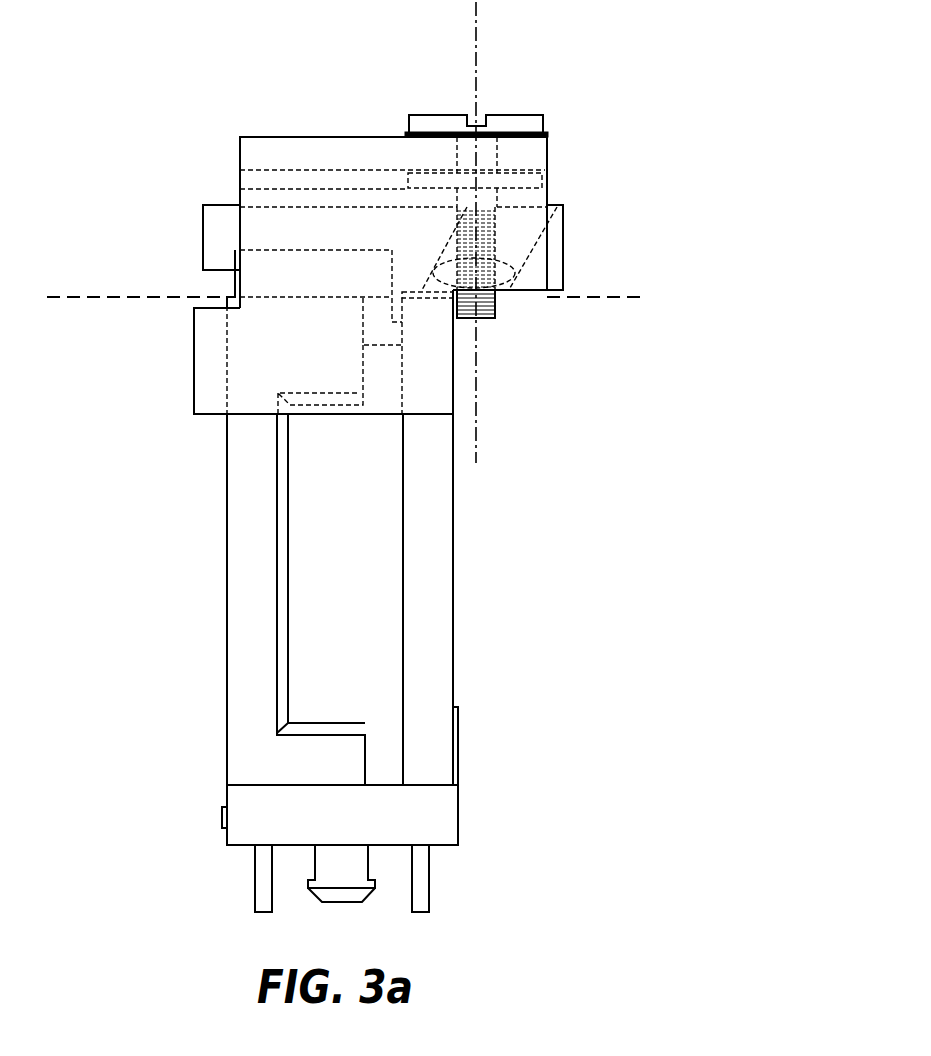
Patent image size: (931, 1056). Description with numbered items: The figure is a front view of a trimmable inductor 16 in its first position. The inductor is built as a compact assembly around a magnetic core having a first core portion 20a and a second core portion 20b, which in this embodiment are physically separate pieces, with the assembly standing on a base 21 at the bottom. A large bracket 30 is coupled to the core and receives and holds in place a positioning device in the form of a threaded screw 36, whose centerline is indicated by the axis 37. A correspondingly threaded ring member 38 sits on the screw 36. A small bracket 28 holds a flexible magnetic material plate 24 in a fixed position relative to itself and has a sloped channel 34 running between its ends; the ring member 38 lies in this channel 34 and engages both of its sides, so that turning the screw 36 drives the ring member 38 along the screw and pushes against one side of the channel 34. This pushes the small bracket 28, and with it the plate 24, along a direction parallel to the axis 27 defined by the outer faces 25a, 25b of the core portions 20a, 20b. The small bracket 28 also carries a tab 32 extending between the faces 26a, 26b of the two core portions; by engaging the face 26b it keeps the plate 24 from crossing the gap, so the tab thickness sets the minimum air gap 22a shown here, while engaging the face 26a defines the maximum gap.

The trimmable inductor 16 is at (116, 91).
The large bracket 30 is at (304, 133).
The small bracket 28 is at (199, 216).
The axis 27 is at (69, 293).
The magnetic material plate 24 is at (233, 282).
The outer face of first core portion 25a is at (264, 304).
The outer face of second core portion 25b is at (431, 303).
The first face of first core portion 26a is at (358, 366).
The face of second core portion 26b is at (407, 394).
The screw axis 37 is at (473, 10).
The threaded screw 36 is at (516, 107).
The ring member 38 is at (500, 255).
The sloped channel 34 is at (525, 252).
The tab 32 is at (407, 325).
The minimum air gap 22a is at (407, 366).
The first core portion 20a is at (238, 626).
The second core portion 20b is at (435, 551).
The base plate 21 is at (444, 814).